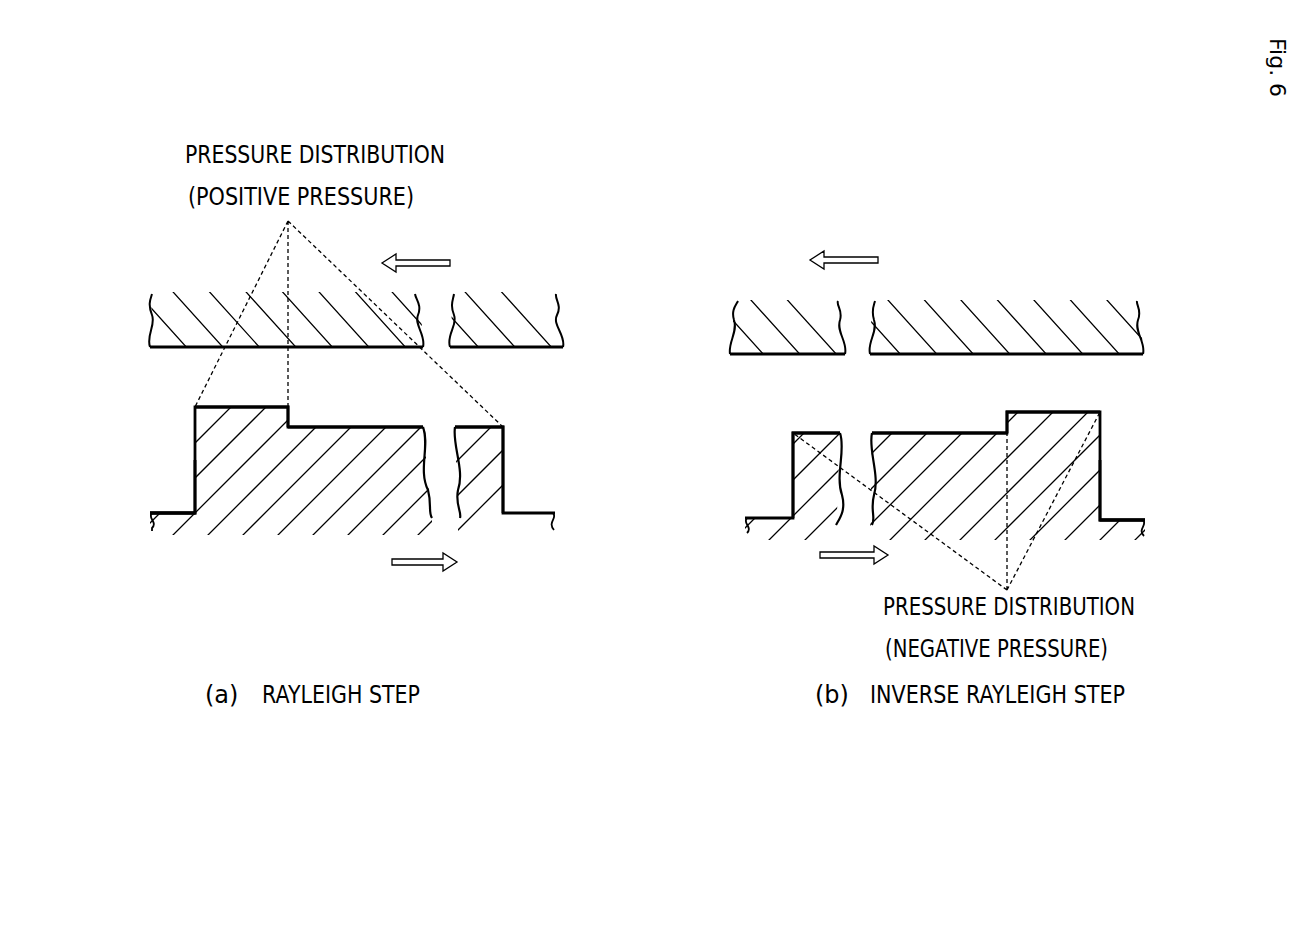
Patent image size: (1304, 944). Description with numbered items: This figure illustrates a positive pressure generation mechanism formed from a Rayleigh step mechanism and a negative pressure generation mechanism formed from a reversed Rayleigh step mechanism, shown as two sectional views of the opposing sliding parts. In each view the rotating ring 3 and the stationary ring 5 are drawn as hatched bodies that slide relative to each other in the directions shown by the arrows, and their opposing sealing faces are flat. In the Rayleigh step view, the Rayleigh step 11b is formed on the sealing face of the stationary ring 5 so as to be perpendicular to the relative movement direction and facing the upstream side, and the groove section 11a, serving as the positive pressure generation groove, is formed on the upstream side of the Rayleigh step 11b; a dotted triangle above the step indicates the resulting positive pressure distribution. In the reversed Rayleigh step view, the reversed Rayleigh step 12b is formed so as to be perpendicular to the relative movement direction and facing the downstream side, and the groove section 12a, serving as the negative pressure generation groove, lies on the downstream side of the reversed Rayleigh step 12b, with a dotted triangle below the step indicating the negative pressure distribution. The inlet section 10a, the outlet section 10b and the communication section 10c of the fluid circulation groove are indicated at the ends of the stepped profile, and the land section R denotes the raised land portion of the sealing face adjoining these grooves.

The rotating ring 3 is at (190, 302).
The stationary ring 5 is at (298, 532).
The land section R is at (240, 407).
The inlet section 10a is at (552, 515).
The outlet section 10b is at (148, 513).
The communication section 10c is at (153, 479).
The groove section 11a is at (407, 426).
The Rayleigh step 11b is at (290, 408).
The groove section 12a is at (888, 432).
The reversed Rayleigh step 12b is at (1007, 410).